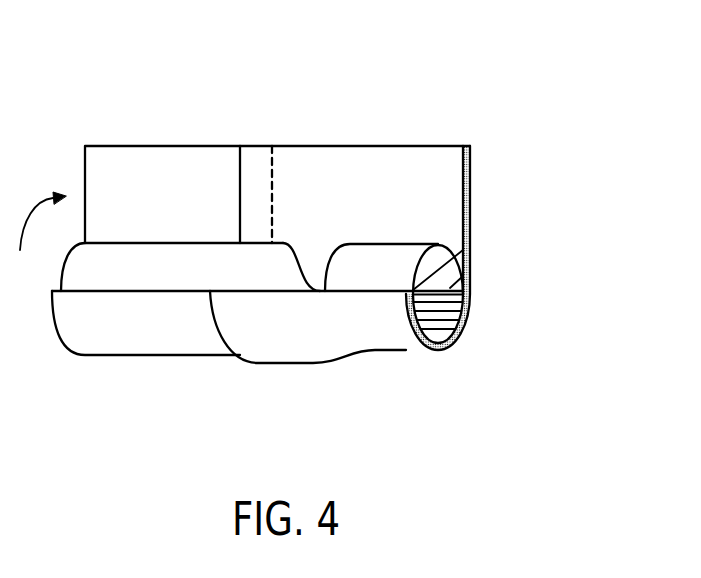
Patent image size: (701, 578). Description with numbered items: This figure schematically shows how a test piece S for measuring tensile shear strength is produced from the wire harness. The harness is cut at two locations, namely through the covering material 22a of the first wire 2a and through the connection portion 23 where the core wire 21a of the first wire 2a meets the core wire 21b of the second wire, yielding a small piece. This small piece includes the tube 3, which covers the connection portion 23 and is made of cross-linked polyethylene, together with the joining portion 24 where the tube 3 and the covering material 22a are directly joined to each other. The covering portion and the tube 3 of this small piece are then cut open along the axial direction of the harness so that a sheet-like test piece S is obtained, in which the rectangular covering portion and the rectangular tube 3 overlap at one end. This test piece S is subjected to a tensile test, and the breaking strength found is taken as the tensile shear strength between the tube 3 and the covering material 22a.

The covering material 22a is at (161, 175).
The joining portion 24 is at (255, 165).
The connection portion 23 is at (375, 262).
The test piece S is at (478, 177).
The core wire 21b is at (448, 274).
The core wire 21a is at (440, 315).
The first wire 2a is at (141, 330).
The tube 3 is at (382, 333).